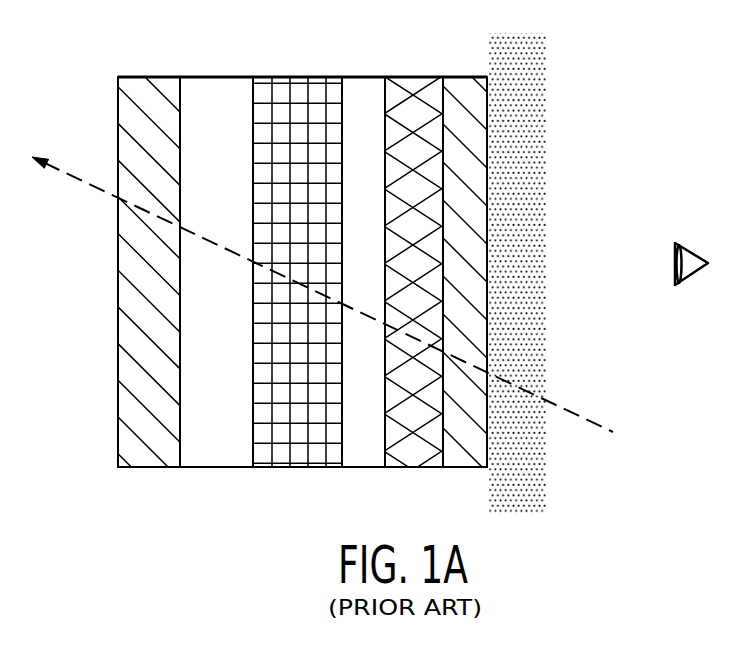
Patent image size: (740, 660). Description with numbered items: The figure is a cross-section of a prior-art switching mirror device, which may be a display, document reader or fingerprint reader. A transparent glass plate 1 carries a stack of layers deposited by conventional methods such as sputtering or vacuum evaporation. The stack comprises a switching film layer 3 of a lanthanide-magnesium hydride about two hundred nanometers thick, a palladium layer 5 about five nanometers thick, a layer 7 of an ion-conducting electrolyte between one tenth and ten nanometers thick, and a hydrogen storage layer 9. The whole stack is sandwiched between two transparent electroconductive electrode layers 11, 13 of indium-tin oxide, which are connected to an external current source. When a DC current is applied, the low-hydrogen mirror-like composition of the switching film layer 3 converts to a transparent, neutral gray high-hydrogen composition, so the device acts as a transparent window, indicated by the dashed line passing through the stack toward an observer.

The transparent glass plate 1 is at (532, 488).
The switching film layer 3 is at (422, 97).
The palladium layer 5 is at (362, 98).
The ion-conducting electrolyte layer 7 is at (290, 97).
The hydrogen storage layer 9 is at (217, 97).
The transparent electroconductive electrode layer 11 is at (148, 97).
The transparent electroconductive electrode layer 13 is at (468, 98).